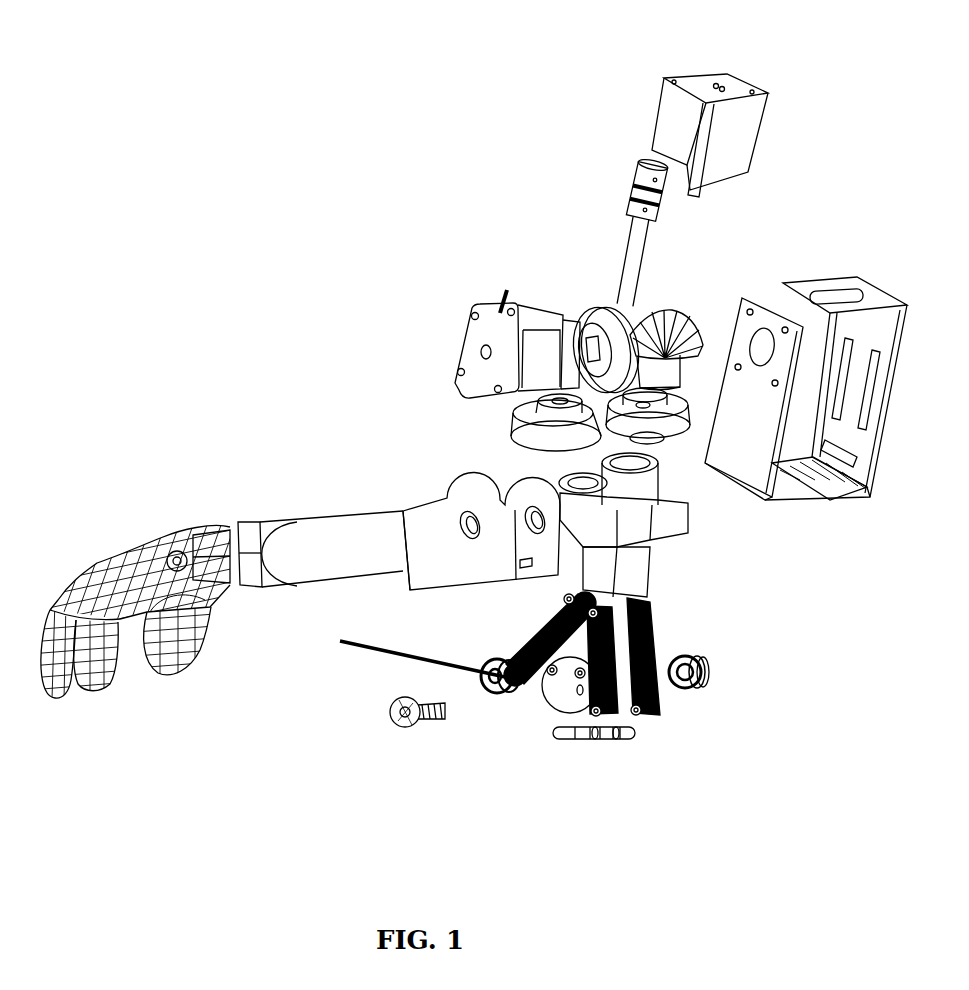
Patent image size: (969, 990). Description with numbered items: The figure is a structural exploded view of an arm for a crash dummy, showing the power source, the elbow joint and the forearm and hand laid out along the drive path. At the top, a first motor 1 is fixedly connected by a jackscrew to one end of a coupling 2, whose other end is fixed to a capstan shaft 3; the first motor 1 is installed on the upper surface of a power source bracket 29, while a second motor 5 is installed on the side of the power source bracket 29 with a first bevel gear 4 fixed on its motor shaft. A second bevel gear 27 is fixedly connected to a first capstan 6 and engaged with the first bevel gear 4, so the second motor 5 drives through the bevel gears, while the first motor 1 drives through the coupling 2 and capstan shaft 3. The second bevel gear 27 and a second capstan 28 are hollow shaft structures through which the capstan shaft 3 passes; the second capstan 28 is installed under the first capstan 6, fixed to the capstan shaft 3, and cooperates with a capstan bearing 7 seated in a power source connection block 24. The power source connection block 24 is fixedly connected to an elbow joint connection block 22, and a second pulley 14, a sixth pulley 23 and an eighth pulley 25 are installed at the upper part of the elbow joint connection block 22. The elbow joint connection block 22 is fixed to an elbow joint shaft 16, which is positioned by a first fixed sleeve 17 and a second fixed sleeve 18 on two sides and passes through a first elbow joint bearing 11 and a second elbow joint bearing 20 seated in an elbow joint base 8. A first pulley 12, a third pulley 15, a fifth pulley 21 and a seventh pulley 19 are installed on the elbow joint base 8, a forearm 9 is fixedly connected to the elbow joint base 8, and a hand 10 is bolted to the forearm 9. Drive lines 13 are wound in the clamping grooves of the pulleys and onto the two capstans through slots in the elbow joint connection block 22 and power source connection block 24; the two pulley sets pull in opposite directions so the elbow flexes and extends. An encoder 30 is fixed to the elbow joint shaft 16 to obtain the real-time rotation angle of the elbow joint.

The first motor 1 is at (668, 130).
The coupling 2 is at (632, 183).
The capstan shaft 3 is at (630, 250).
The first bevel gear 4 is at (585, 318).
The second motor 5 is at (464, 320).
The first capstan 6 is at (512, 432).
The capstan bearing 7 is at (545, 480).
The elbow joint base 8 is at (450, 552).
The forearm 9 is at (304, 551).
The hand 10 is at (164, 540).
The first elbow joint bearing 11 is at (406, 652).
The first pulley 12 is at (490, 660).
The drive lines 13 is at (530, 640).
The second pulley 14 is at (562, 599).
The third pulley 15 is at (548, 668).
The elbow joint shaft 16 is at (556, 735).
The first fixed sleeve 17 is at (592, 742).
The second fixed sleeve 18 is at (619, 738).
The seventh pulley 19 is at (655, 720).
The second elbow joint bearing 20 is at (705, 680).
The fifth pulley 21 is at (670, 665).
The elbow joint connection block 22 is at (647, 627).
The sixth pulley 23 is at (645, 607).
The power source connection block 24 is at (643, 572).
The eighth pulley 25 is at (650, 612).
The second bevel gear 27 is at (688, 292).
The second capstan 28 is at (697, 363).
The power source bracket 29 is at (845, 282).
The encoder 30 is at (405, 712).